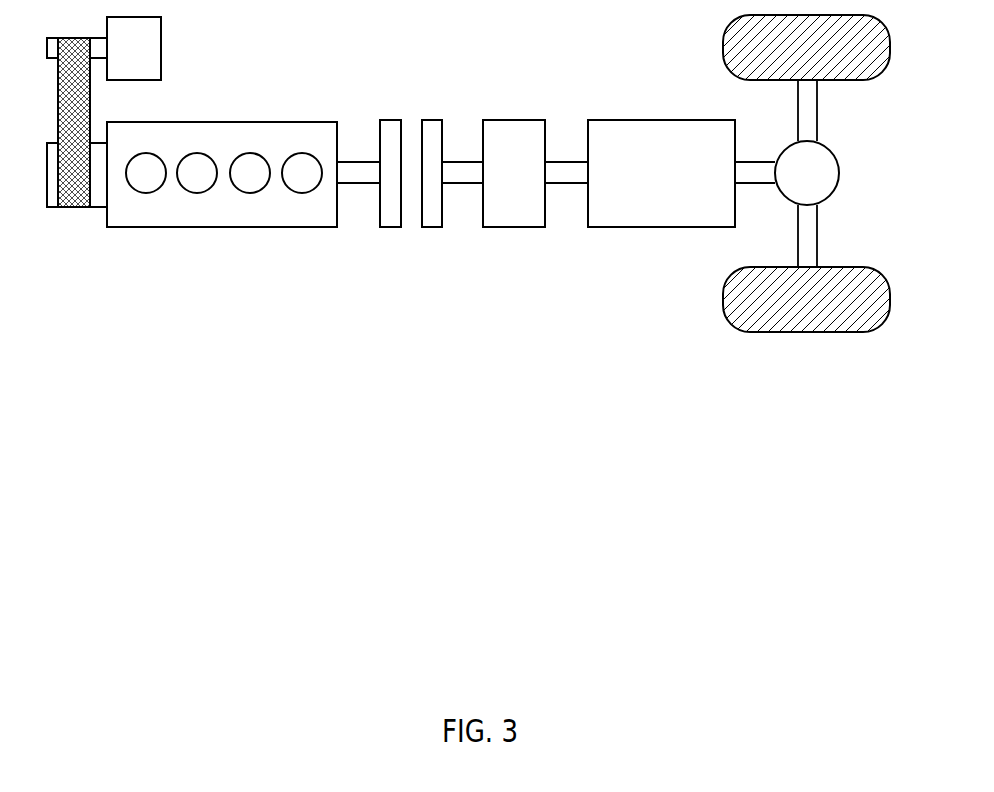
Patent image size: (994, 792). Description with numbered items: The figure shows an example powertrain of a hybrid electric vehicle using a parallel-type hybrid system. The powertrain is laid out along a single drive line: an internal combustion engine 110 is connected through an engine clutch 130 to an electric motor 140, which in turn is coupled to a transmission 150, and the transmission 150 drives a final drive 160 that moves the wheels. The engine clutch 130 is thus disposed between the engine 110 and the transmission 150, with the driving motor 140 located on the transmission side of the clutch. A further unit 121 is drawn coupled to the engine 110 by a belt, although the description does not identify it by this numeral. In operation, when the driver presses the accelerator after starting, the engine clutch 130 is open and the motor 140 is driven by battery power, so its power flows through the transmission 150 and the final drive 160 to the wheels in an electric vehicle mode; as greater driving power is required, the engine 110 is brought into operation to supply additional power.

The internal combustion engine 110 is at (297, 120).
The starter generator / belt-driven auxiliary 121 is at (163, 28).
The engine clutch 130 is at (440, 120).
The electric motor 140 is at (522, 120).
The transmission 150 is at (693, 118).
The final drive 160 is at (840, 155).